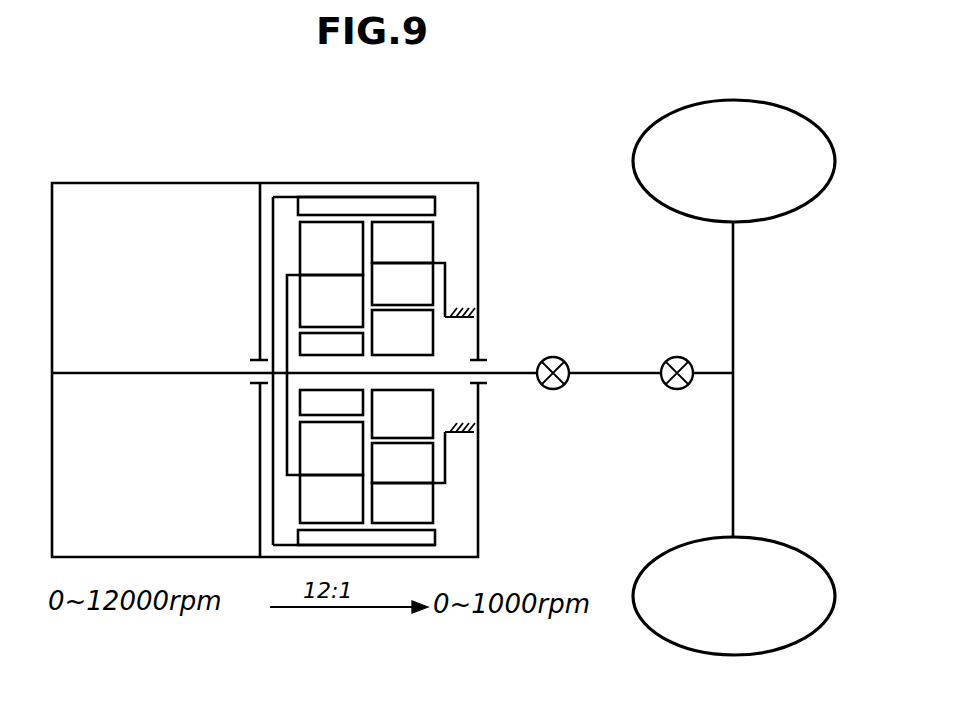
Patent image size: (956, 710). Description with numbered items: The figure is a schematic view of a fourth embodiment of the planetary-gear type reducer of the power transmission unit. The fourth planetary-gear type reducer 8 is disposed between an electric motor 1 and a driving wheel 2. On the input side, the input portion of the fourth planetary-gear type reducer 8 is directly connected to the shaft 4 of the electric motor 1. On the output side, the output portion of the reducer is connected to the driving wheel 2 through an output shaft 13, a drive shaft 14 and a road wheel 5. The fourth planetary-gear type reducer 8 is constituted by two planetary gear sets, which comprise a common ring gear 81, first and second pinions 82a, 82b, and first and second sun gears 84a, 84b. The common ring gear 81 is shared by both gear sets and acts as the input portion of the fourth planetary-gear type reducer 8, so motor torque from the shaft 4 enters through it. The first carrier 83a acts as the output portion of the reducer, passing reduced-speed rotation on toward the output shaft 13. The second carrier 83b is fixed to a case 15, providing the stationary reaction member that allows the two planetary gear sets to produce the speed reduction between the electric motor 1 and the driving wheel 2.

The electric motor 1 is at (163, 180).
The driving wheel 2 is at (633, 150).
The shaft 4 is at (181, 373).
The road wheel 5 is at (735, 292).
The fourth planetary-gear type reducer 8 is at (397, 178).
The common ring gear 81 is at (371, 205).
The first pinion 82a is at (323, 240).
The second pinion 82b is at (417, 237).
The first carrier 83a is at (290, 257).
The second carrier 83b is at (458, 257).
The first sun gear 84a is at (320, 405).
The second sun gear 84b is at (420, 400).
The output shaft 13 is at (497, 376).
The drive shaft 14 is at (614, 376).
The case 15 is at (460, 322).